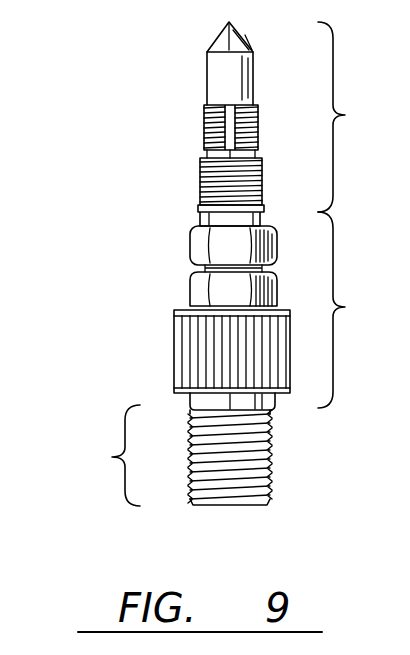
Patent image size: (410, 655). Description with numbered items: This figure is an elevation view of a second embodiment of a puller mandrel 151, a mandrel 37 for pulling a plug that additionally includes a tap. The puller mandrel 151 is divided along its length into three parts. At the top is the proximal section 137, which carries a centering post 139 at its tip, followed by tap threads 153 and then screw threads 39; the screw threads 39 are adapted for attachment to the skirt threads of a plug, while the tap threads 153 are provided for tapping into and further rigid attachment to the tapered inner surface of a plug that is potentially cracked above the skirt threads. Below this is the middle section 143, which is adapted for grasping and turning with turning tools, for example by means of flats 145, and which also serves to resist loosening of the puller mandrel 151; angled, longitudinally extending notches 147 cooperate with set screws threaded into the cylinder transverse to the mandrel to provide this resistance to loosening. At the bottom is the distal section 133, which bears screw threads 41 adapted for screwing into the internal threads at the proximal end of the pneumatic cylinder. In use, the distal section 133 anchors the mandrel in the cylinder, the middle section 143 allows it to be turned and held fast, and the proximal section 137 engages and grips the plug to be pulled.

The centering post 139 is at (207, 52).
The tap threads 153 is at (204, 135).
The screw threads 39 is at (200, 185).
The mandrel 37 is at (148, 243).
The puller mandrel 151 is at (178, 242).
The flats 145 is at (190, 290).
The notches 147 is at (174, 352).
The screw threads 41 is at (272, 460).
The proximal section 137 is at (362, 117).
The middle section 143 is at (363, 310).
The distal section 133 is at (99, 455).